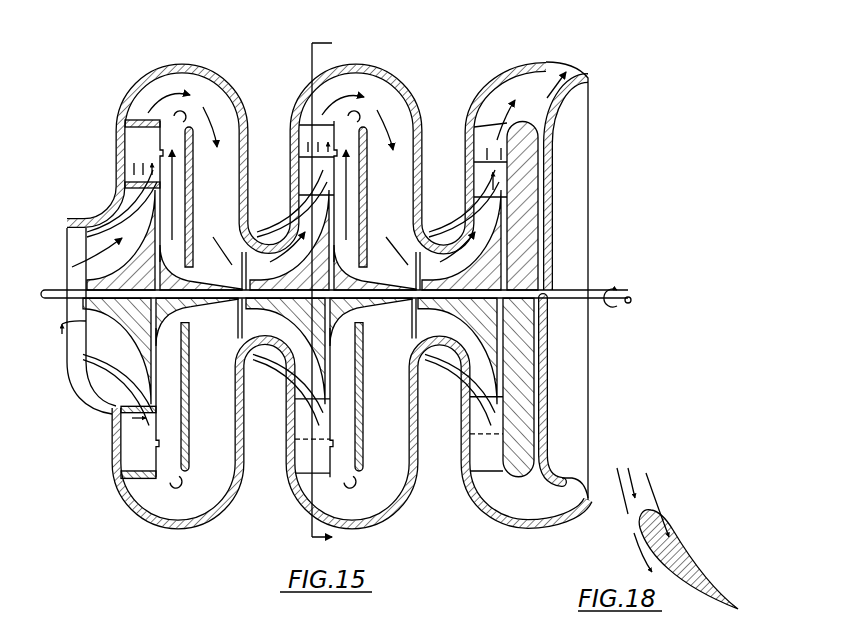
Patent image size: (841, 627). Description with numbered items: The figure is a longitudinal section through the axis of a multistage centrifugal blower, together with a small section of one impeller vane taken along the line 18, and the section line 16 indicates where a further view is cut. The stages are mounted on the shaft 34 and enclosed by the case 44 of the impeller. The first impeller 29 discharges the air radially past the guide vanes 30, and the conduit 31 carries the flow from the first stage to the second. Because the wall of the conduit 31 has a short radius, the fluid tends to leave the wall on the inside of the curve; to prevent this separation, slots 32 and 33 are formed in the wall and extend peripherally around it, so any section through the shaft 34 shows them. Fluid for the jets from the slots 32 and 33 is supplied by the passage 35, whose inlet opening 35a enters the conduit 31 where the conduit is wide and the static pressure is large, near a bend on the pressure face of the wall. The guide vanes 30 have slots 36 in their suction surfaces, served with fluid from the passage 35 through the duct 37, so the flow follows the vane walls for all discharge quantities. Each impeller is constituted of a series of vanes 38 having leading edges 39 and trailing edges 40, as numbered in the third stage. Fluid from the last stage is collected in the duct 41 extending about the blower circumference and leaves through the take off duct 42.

In FIG. 15, the section line 16— 16 is at (336, 292).
In FIG. 15, the section line 18— 18 is at (94, 334).
In FIG. 15, the first impeller 29 is at (150, 376).
In FIG. 15, the guide vanes 30 is at (158, 133).
In FIG. 15, the conduit 31 is at (201, 104).
In FIG. 15, the slot 32 is at (167, 113).
In FIG. 15, the slot 33 is at (192, 118).
In FIG. 15, the shaft 34 is at (62, 292).
In FIG. 15, the passage 35 is at (181, 173).
In FIG. 15, the inlet opening 35a is at (186, 263).
In FIG. 15, the slots 36 is at (332, 158).
In FIG. 15, the duct 37 is at (190, 406).
In FIG. 15, the vanes 38 is at (121, 240).
In FIG. 18, the vanes 38 is at (690, 578).
In FIG. 15, the leading edges 39 is at (431, 244).
In FIG. 18, the leading edges 39 is at (649, 510).
In FIG. 15, the trailing edges 40 is at (478, 198).
In FIG. 18, the trailing edges 40 is at (738, 609).
In FIG. 15, the duct 41 is at (519, 514).
In FIG. 15, the take off duct 42 is at (566, 75).
In FIG. 15, the case 44 is at (490, 80).